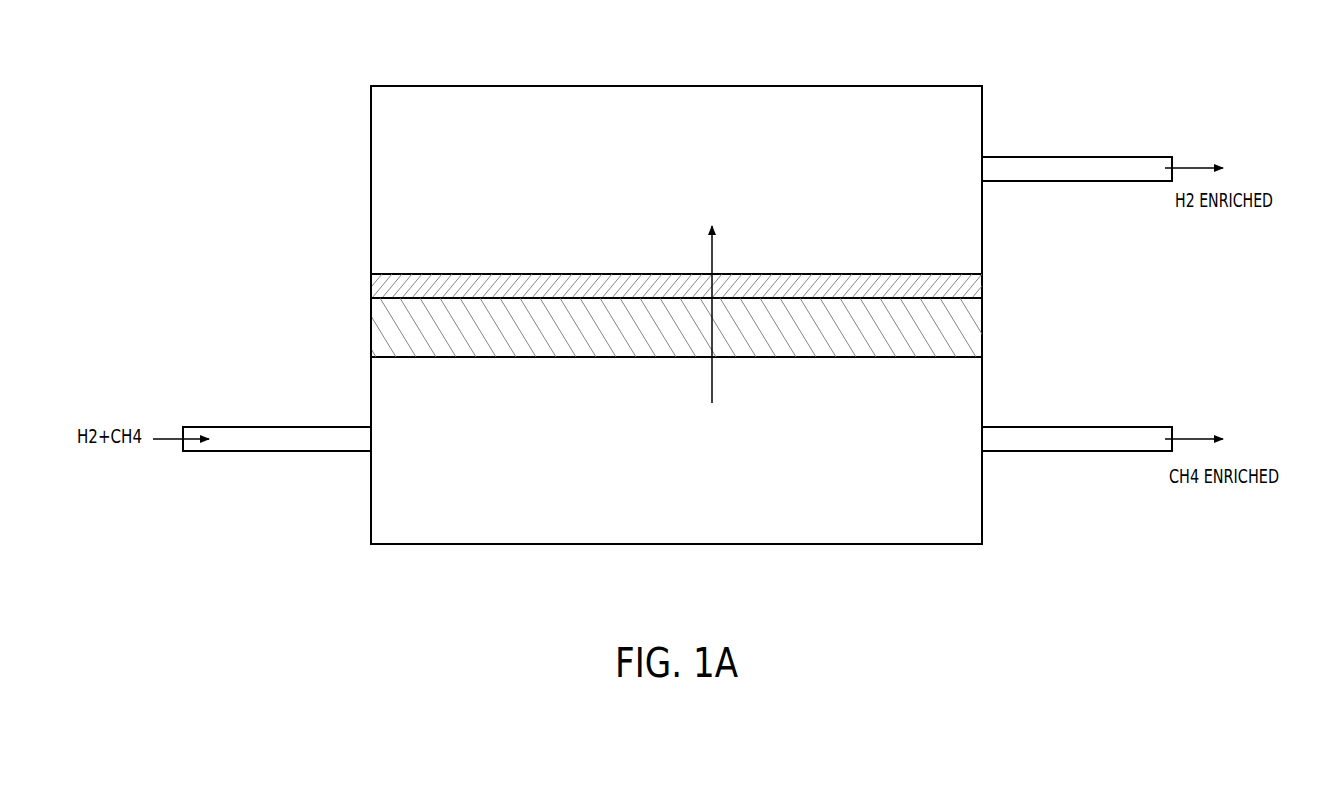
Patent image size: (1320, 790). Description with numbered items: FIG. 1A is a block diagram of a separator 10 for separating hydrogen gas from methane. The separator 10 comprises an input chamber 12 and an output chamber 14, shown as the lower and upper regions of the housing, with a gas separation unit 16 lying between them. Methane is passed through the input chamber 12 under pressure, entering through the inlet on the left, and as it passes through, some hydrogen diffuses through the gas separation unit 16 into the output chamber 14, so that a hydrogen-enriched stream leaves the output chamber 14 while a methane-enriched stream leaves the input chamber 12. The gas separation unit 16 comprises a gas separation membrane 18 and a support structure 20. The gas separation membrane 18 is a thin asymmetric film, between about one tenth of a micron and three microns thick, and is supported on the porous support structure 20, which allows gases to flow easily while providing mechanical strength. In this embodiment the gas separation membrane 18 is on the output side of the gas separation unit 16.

The separator 10 is at (358, 188).
The input chamber 12 is at (825, 545).
The output chamber 14 is at (732, 86).
The gas separation unit 16 is at (367, 300).
The gas separation membrane 18 is at (548, 273).
The support structure 20 is at (578, 348).